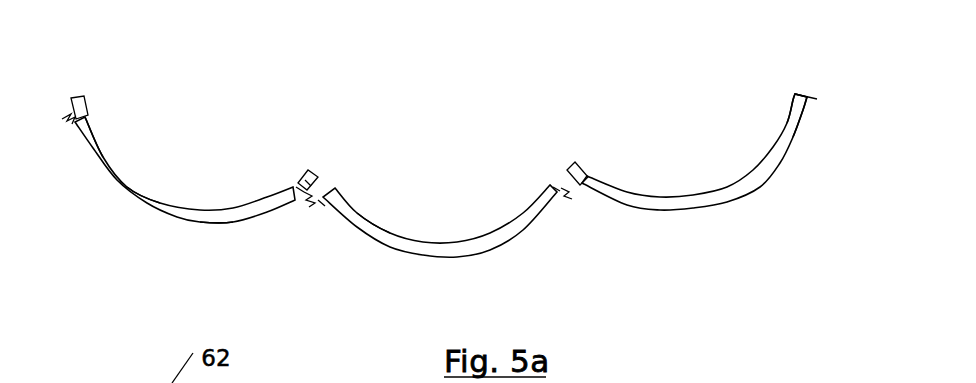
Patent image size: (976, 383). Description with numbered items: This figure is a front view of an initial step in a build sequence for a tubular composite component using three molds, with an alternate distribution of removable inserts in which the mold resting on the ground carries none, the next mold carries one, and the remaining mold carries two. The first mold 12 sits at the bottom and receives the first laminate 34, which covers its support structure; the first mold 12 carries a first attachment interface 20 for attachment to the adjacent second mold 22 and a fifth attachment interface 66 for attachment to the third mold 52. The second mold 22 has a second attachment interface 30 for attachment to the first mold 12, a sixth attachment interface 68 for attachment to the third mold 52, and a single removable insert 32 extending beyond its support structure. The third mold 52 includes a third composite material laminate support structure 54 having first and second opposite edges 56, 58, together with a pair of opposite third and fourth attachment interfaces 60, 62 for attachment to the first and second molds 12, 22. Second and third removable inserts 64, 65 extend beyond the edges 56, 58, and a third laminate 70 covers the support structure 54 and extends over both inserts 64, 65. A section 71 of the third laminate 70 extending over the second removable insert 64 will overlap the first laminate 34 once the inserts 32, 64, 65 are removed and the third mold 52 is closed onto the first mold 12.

The first mold 12 is at (480, 255).
The first attachment interface 20 is at (560, 190).
The second mold 22 is at (697, 203).
The second attachment interface 30 is at (577, 190).
The removable insert 32 is at (580, 162).
The first laminate 34 is at (373, 226).
The third mold 52 is at (177, 215).
The third composite material laminate support structure 54 is at (213, 216).
The first edge 56 is at (300, 192).
The second edge 58 is at (90, 128).
The third attachment interface 60 is at (305, 200).
The fourth attachment interface 62 is at (64, 120).
The second removable insert 64 is at (309, 170).
The third removable insert 65 is at (78, 96).
The fifth attachment interface 66 is at (322, 207).
The sixth attachment interface 68 is at (808, 100).
The third laminate 70 is at (143, 192).
The section of the third laminate 71 is at (308, 183).